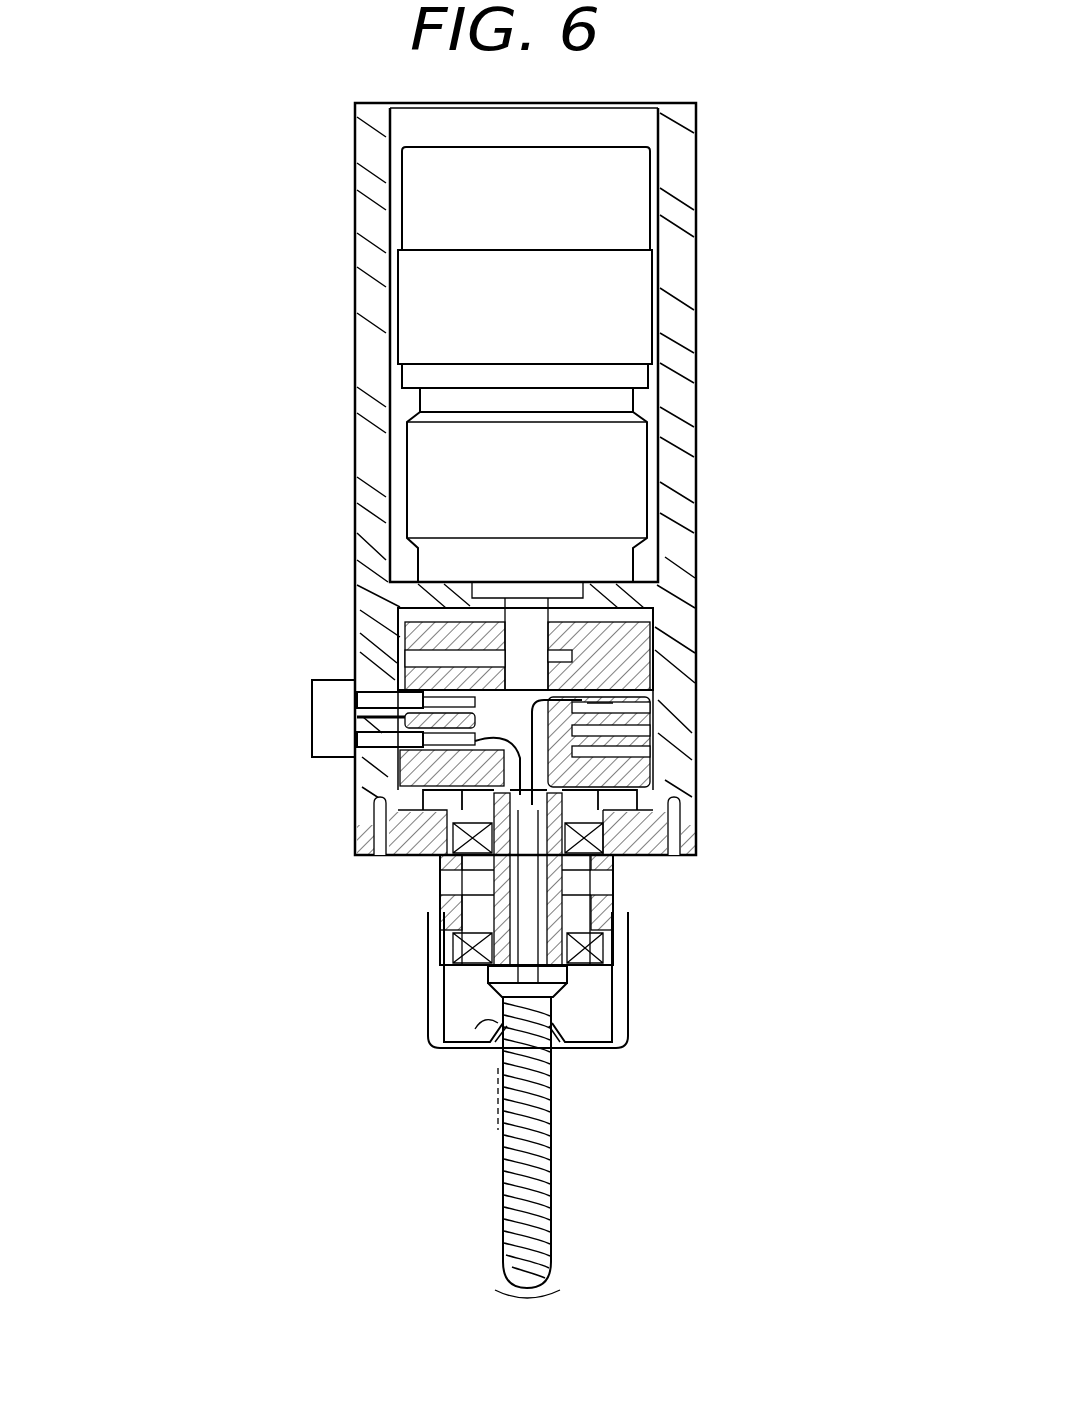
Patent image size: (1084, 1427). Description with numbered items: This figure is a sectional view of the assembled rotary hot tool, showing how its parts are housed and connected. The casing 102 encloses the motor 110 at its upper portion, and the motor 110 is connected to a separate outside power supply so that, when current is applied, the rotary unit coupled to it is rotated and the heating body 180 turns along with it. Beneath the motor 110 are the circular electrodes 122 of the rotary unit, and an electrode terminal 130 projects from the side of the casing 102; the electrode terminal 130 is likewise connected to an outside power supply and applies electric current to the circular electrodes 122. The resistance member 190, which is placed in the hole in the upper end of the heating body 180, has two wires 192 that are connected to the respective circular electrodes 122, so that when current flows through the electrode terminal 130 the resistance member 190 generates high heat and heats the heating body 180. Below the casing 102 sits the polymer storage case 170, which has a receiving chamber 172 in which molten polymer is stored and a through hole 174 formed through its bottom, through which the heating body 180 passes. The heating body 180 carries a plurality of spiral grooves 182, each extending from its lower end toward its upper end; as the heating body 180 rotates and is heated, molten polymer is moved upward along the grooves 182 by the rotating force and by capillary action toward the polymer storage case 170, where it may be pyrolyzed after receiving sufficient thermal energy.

The casing 102 is at (357, 337).
The motor 110 is at (428, 484).
The circular electrodes 122 is at (655, 733).
The electrode terminal 130 is at (312, 710).
The wires 192 is at (660, 808).
The resistance member 190 is at (437, 897).
The polymer storage case 170 is at (428, 1018).
The receiving chamber 172 is at (593, 1031).
The through hole 174 is at (556, 1045).
The heating body 180 is at (500, 1202).
The spiral grooves 182 is at (560, 1220).